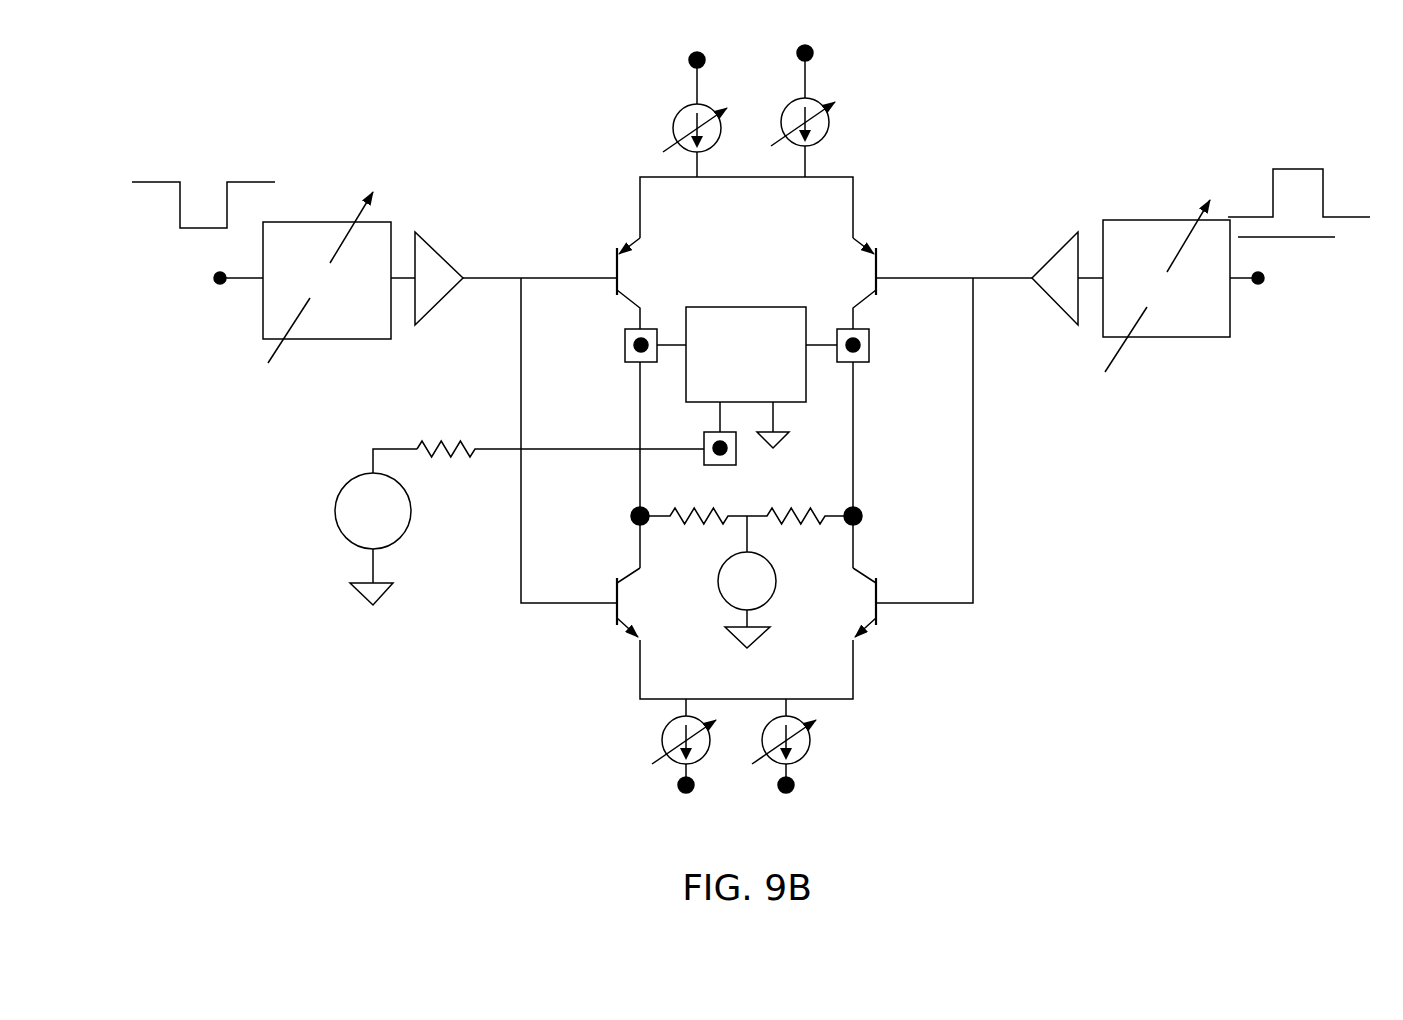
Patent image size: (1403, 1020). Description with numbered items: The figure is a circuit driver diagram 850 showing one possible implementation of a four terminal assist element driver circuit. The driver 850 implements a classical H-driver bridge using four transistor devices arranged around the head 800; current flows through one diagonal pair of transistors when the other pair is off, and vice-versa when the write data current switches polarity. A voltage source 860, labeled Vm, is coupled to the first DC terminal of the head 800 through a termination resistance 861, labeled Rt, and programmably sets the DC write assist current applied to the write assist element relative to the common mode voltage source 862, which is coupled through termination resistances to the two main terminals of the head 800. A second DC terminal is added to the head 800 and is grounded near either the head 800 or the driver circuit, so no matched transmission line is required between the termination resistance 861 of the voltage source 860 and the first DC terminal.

The circuit driver diagram 850 is at (578, 80).
The head 800 is at (750, 265).
The voltage source 860 is at (323, 485).
The termination resistance 861 is at (408, 416).
The common mode voltage source 862 is at (716, 598).